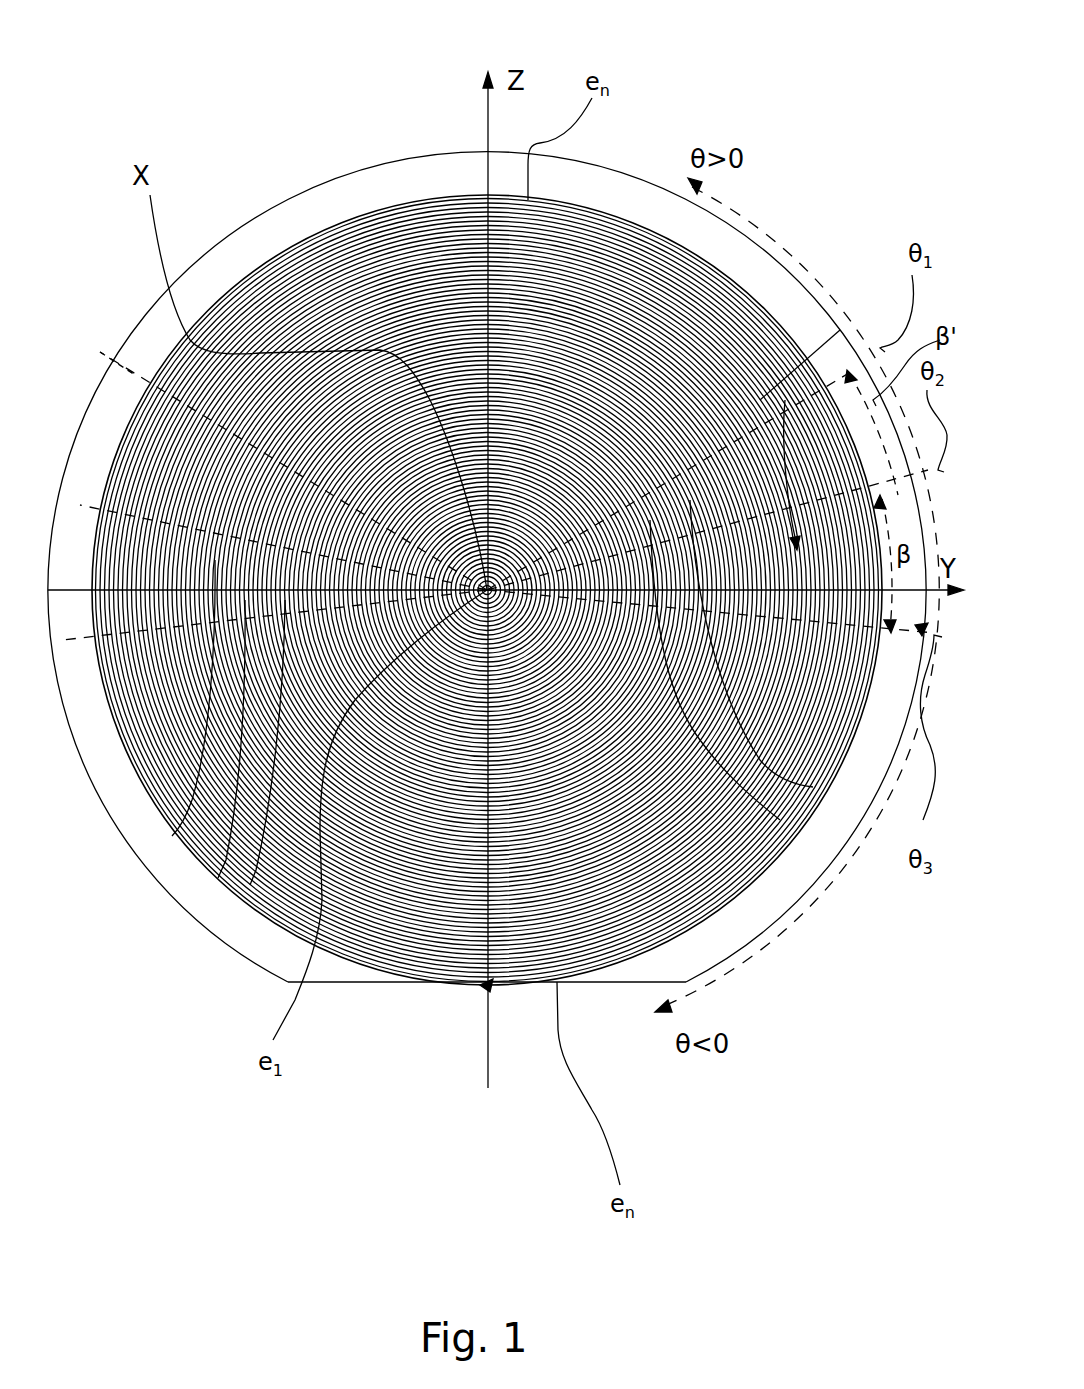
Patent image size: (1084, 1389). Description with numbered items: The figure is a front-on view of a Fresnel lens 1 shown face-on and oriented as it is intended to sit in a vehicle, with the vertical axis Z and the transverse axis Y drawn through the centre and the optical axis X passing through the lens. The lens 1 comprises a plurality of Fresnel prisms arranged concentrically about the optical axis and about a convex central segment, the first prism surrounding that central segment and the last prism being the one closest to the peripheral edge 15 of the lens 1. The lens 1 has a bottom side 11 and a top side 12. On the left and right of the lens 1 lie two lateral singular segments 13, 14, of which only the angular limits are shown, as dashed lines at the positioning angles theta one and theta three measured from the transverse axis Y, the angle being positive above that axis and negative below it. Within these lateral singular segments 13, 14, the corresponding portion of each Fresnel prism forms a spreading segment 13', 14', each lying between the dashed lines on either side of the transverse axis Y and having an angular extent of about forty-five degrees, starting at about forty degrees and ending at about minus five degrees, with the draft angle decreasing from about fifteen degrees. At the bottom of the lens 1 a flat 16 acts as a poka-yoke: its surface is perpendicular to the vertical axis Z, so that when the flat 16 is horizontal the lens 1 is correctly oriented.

The Fresnel lens 1 is at (285, 157).
The bottom side 11 is at (484, 988).
The top side 12 is at (488, 150).
The lateral singular segment 13 is at (820, 327).
The spreading segment 13' is at (789, 763).
The lateral singular segment 14 is at (161, 794).
The spreading segment 14' is at (231, 814).
The peripheral edge 15 is at (628, 174).
The flat 16 is at (357, 984).